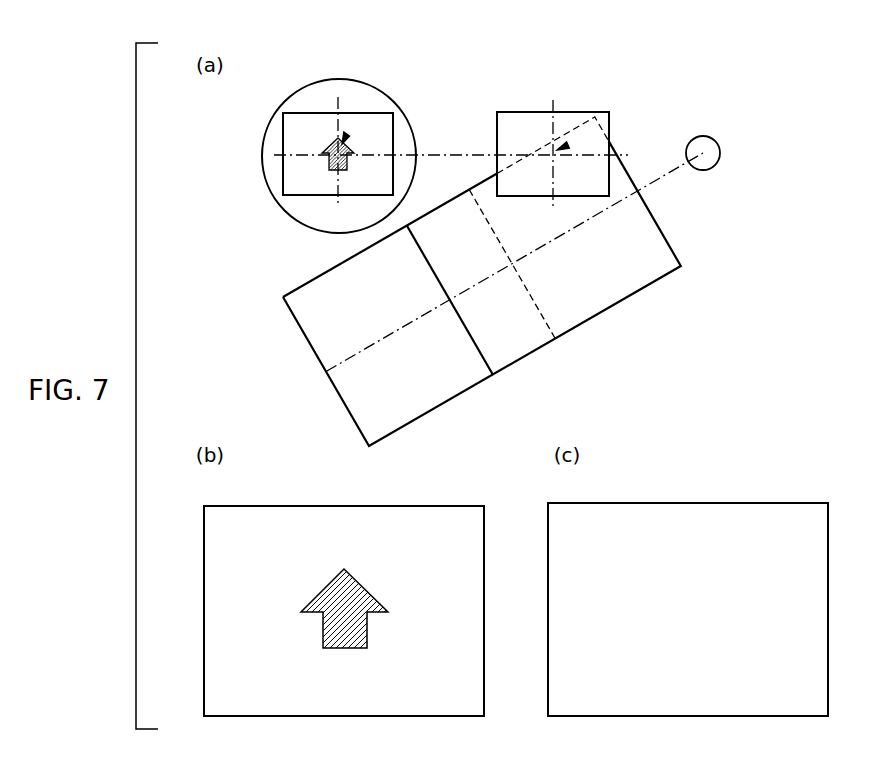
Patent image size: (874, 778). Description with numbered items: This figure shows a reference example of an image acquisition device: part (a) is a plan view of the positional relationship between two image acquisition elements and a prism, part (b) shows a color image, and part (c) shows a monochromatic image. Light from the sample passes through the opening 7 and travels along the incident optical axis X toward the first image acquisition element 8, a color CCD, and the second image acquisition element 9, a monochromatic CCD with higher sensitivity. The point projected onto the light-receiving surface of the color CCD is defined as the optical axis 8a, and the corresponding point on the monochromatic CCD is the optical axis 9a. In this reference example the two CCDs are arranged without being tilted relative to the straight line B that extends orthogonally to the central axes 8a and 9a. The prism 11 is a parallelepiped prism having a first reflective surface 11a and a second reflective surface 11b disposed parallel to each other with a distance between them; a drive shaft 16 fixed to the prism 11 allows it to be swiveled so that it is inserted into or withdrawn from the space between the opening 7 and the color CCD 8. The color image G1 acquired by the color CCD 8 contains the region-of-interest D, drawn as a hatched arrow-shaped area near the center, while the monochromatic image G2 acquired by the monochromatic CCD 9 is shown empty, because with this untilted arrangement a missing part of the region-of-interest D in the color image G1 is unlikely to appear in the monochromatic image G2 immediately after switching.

The opening 7 is at (306, 87).
The first image acquisition element 8 is at (383, 113).
The optical axis 8a is at (346, 135).
The incident optical axis X is at (355, 99).
The second image acquisition element 9 is at (520, 112).
The optical axis 9a is at (568, 145).
The prism 11 is at (518, 360).
The first reflective surface 11a is at (433, 393).
The second reflective surface 11b is at (630, 279).
The drive shaft 16 is at (705, 171).
The straight line B is at (453, 152).
The region-of-interest D is at (326, 147).
The color image G1 is at (308, 506).
The monochromatic image G2 is at (663, 503).